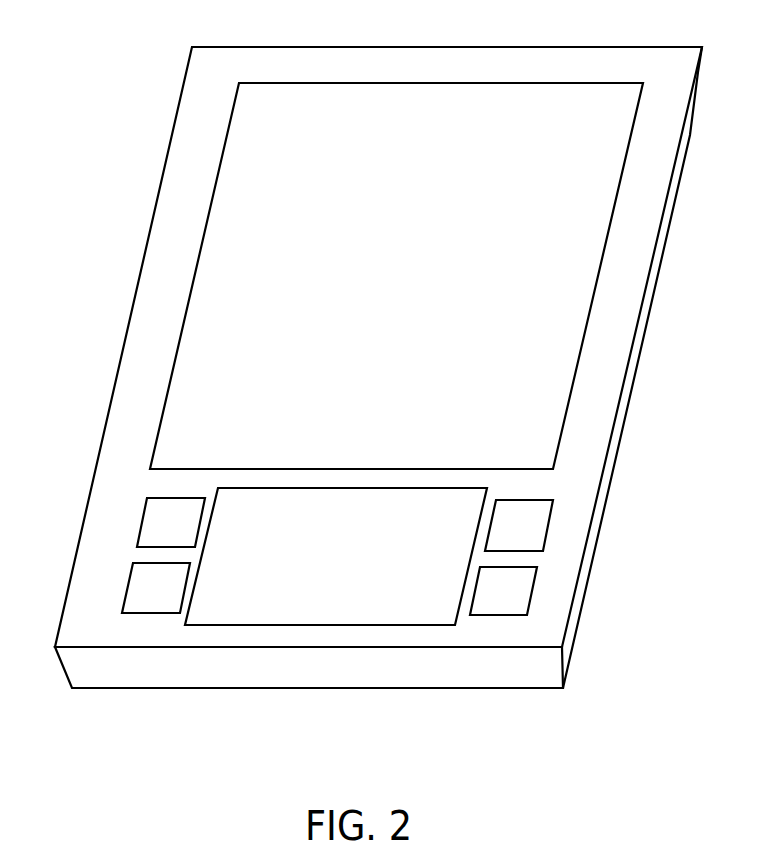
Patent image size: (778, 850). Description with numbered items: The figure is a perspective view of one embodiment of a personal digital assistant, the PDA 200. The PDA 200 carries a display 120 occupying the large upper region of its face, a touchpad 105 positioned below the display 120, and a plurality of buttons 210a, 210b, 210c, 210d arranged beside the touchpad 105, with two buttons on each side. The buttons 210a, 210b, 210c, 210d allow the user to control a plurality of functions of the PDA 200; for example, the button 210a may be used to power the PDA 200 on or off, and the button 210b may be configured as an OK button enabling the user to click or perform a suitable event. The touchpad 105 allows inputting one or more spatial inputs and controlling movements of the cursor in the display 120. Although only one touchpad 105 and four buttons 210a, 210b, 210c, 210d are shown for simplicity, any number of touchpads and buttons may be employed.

The PDA 200 is at (109, 56).
The display 120 is at (388, 288).
The touchpad 105 is at (352, 575).
The button 210a is at (150, 533).
The button 210b is at (142, 603).
The button 210c is at (533, 530).
The button 210d is at (502, 590).